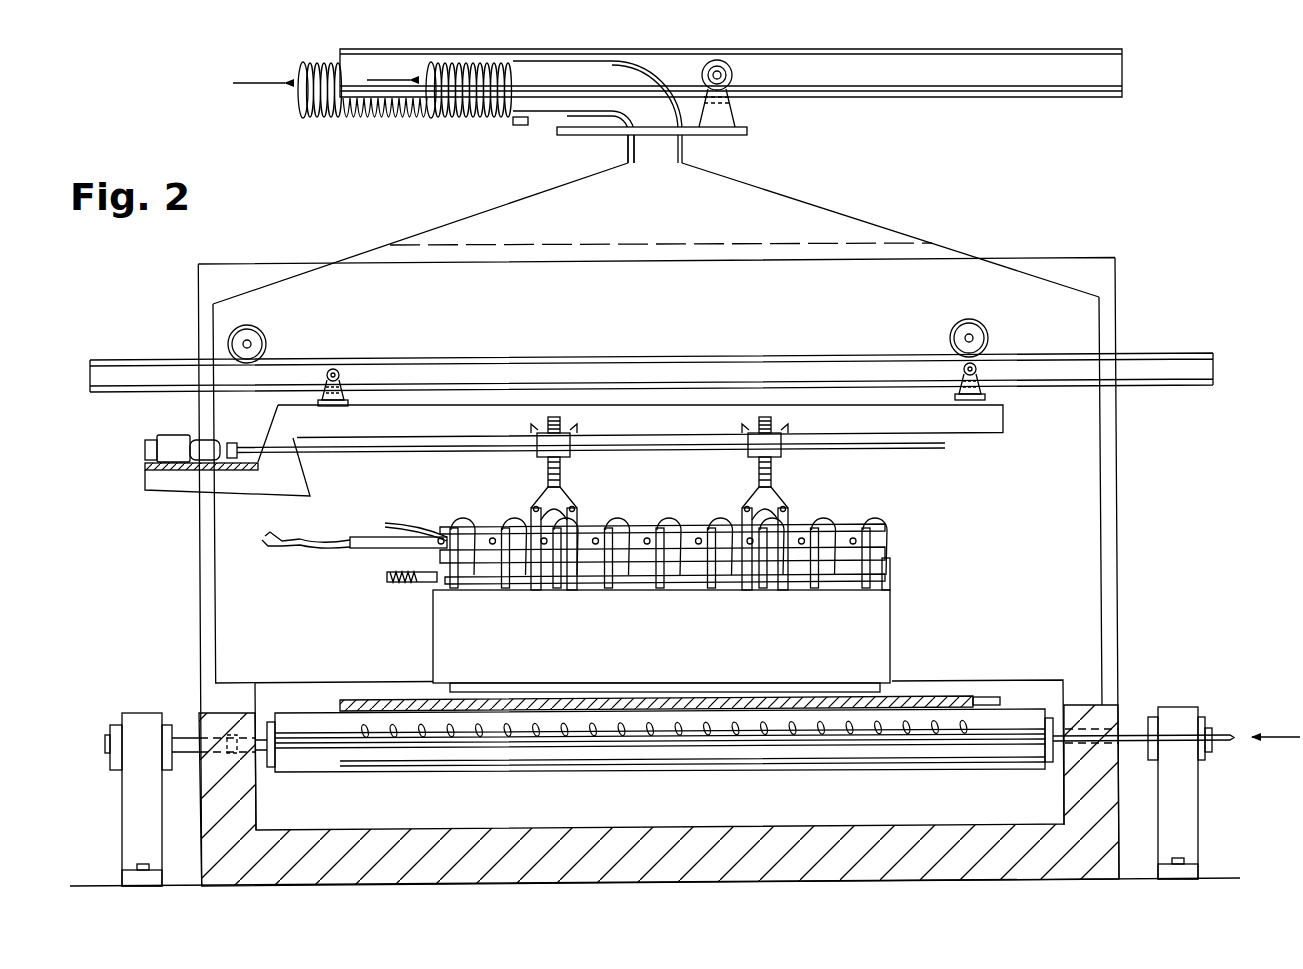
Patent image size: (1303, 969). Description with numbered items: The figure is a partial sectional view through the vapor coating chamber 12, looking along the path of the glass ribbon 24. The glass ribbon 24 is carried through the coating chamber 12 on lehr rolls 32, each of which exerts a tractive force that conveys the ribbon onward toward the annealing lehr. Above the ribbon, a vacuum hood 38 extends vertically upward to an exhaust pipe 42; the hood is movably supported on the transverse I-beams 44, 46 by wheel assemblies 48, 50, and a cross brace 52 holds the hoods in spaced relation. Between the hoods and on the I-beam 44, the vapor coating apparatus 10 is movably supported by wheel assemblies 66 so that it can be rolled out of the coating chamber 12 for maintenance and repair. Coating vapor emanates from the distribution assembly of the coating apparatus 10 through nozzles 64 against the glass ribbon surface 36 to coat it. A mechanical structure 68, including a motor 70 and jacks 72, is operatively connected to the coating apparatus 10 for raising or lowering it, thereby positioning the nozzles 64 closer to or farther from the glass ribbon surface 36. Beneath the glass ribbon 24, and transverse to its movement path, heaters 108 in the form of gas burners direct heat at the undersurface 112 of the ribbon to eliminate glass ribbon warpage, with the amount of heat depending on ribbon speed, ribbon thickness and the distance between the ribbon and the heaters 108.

The vapor coating apparatus 10 is at (907, 597).
The vapor coating chamber 12 is at (1135, 285).
The glass ribbon 24 is at (991, 702).
The lehr rolls 32 is at (970, 768).
The glass ribbon surface 36 is at (947, 700).
The vacuum hood 38 is at (1105, 568).
The exhaust pipes 42 is at (443, 110).
The I-beam 44 is at (1186, 355).
The I-beam 46 is at (928, 42).
The wheel assembly 48 is at (270, 337).
The wheel assembly 50 is at (740, 72).
The cross brace 52 is at (700, 131).
The nozzles 64 is at (877, 684).
The wheel assemblies 66 is at (356, 373).
The mechanical structure 68 is at (631, 395).
The motor 70 is at (159, 439).
The jacks 72 is at (548, 468).
The heaters 108 is at (1228, 724).
The undersurface 112 is at (348, 716).